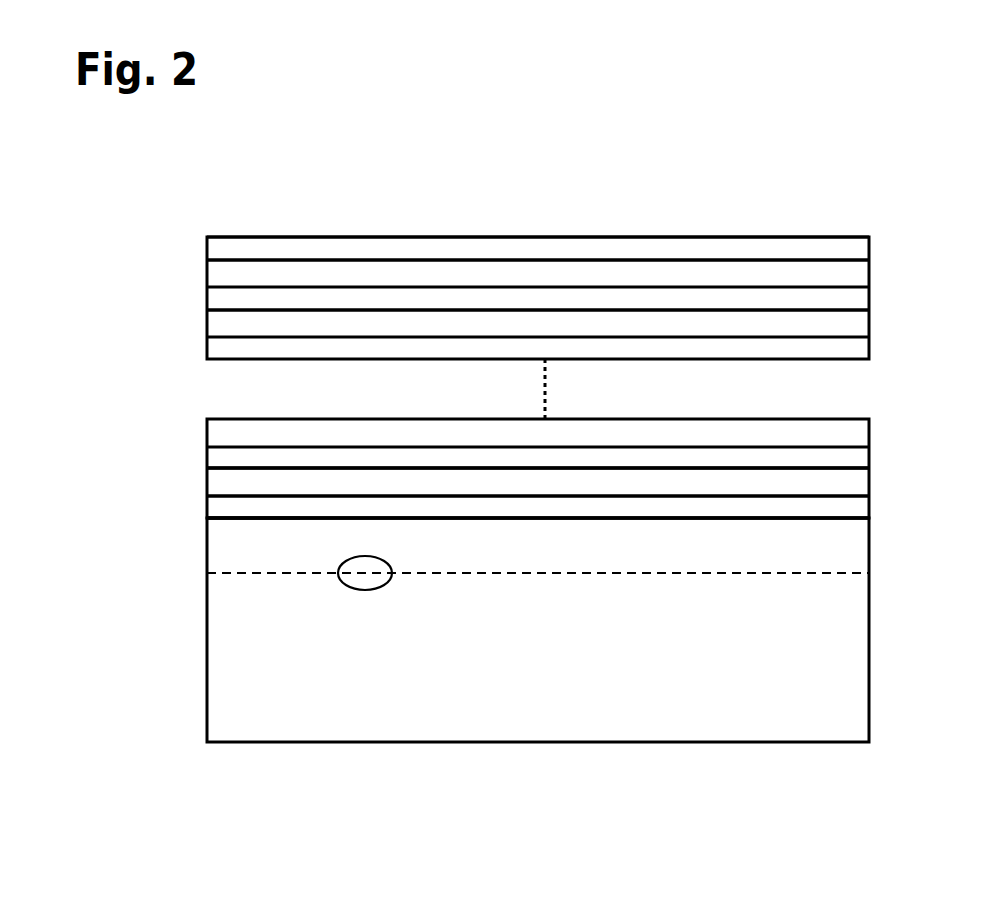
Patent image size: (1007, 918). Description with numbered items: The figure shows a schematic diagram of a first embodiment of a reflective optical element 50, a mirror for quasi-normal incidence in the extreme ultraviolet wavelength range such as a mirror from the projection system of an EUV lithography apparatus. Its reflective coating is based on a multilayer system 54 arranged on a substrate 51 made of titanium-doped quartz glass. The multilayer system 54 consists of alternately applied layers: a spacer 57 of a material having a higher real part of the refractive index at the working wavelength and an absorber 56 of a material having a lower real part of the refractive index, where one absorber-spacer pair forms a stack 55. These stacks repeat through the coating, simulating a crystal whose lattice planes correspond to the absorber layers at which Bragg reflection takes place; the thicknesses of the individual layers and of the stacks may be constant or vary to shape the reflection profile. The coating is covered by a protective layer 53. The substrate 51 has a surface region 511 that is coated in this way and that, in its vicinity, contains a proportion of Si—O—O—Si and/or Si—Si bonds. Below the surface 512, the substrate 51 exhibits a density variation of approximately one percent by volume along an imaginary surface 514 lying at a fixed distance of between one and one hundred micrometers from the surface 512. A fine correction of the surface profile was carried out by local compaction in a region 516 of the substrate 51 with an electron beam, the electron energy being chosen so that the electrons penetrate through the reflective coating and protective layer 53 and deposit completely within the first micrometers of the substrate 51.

The reflective optical element 50 is at (585, 205).
The substrate 51 is at (869, 680).
The protective layer 53 is at (840, 237).
The multilayer system 54 is at (207, 260).
The stack 55 is at (873, 468).
The absorber 56 is at (869, 297).
The spacer 57 is at (869, 275).
The surface region 511 is at (192, 527).
The surface 512 is at (277, 530).
The imaginary surface 514 is at (808, 575).
The region 516 is at (355, 591).